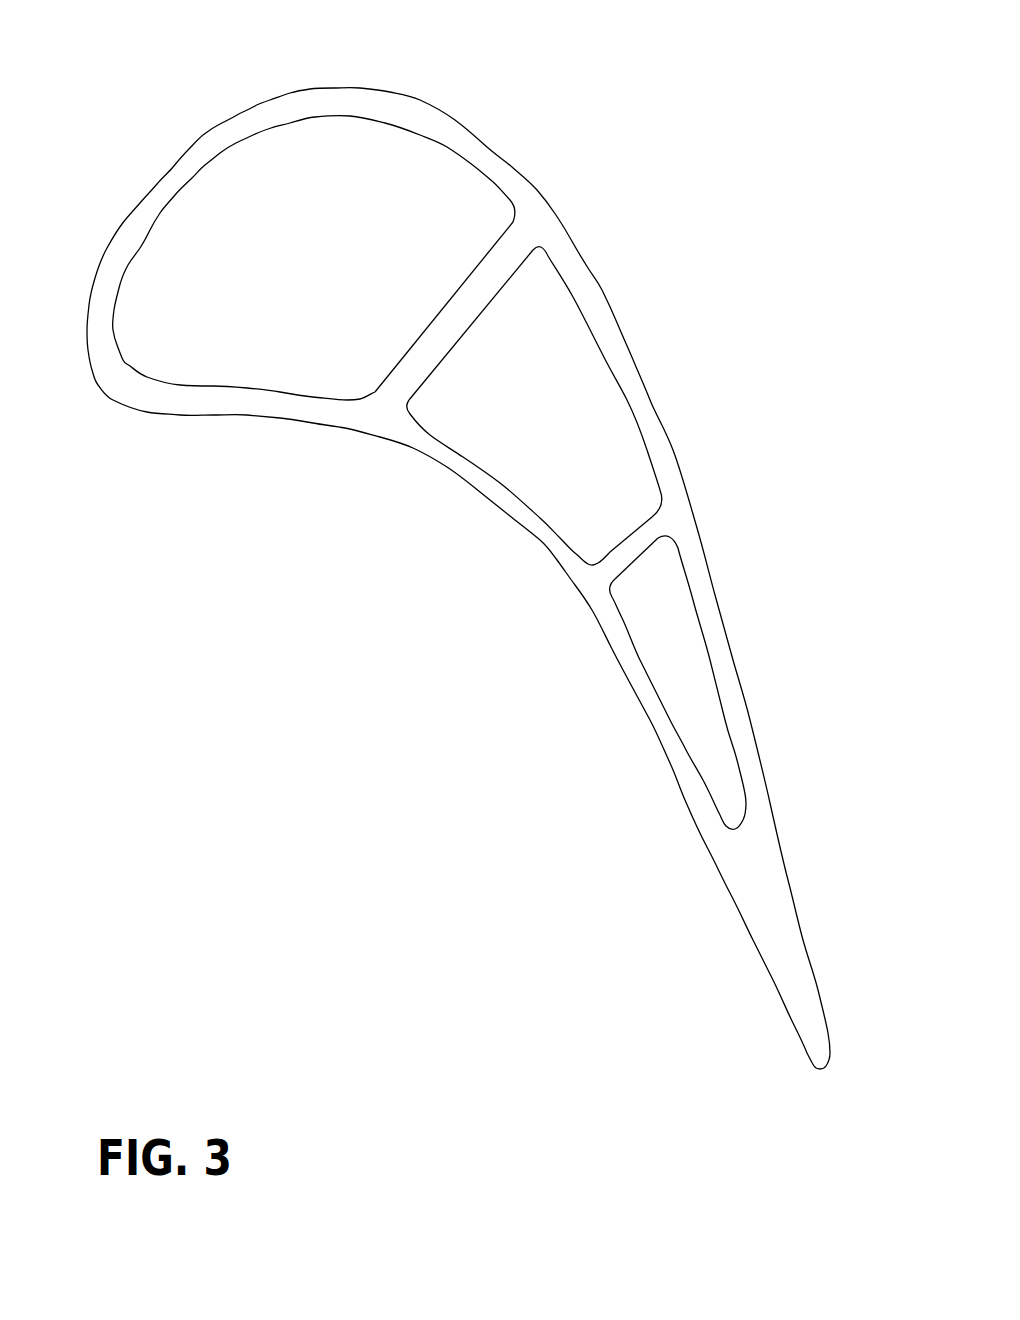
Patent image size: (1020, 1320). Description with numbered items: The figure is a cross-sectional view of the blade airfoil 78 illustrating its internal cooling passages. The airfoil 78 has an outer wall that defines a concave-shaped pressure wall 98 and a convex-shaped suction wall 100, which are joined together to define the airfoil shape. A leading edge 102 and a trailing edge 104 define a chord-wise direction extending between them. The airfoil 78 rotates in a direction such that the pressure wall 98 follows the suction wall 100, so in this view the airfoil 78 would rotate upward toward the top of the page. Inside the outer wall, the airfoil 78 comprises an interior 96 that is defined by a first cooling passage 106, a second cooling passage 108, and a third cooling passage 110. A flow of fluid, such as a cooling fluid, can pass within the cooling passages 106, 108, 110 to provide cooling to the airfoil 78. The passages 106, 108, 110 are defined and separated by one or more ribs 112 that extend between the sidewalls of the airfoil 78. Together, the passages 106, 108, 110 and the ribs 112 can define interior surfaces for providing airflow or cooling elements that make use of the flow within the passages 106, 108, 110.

The airfoil 78 is at (434, 594).
The interior 96 is at (320, 188).
The pressure wall 98 is at (455, 475).
The suction wall 100 is at (575, 240).
The leading edge 102 is at (95, 373).
The trailing edge 104 is at (820, 1070).
The first cooling passage 106 is at (249, 281).
The second cooling passage 108 is at (532, 374).
The third cooling passage 110 is at (677, 639).
The rib 112 is at (423, 332).